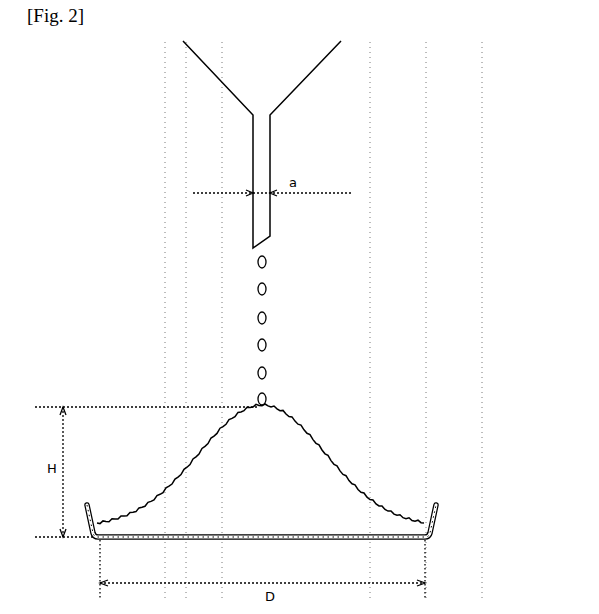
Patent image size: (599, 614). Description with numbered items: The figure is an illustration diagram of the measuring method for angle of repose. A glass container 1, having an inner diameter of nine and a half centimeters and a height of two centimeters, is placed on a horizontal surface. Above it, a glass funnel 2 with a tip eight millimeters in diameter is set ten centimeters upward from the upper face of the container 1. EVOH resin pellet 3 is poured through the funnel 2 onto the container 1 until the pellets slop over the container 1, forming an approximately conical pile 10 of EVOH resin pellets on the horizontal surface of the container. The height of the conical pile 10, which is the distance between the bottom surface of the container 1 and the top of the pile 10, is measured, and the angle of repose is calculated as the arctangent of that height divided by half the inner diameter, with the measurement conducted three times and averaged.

The glass container 1 is at (440, 512).
The glass funnel 2 is at (306, 73).
The EVOH resin pellet 3 is at (266, 289).
The conical pile 10 is at (352, 483).